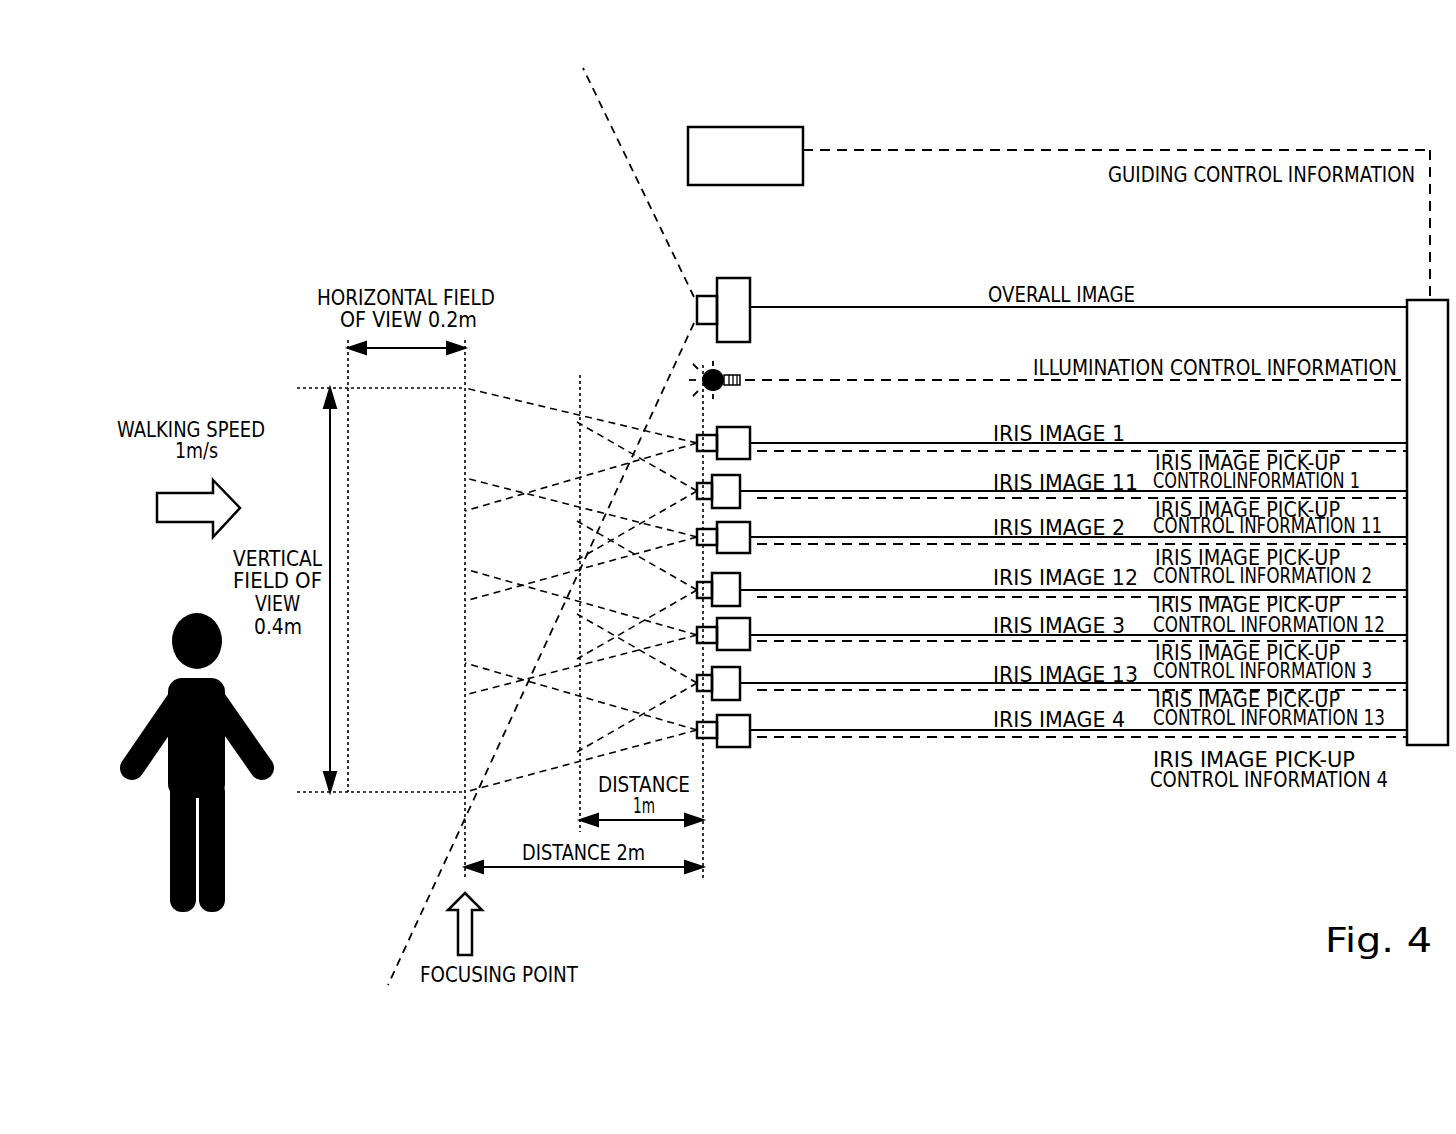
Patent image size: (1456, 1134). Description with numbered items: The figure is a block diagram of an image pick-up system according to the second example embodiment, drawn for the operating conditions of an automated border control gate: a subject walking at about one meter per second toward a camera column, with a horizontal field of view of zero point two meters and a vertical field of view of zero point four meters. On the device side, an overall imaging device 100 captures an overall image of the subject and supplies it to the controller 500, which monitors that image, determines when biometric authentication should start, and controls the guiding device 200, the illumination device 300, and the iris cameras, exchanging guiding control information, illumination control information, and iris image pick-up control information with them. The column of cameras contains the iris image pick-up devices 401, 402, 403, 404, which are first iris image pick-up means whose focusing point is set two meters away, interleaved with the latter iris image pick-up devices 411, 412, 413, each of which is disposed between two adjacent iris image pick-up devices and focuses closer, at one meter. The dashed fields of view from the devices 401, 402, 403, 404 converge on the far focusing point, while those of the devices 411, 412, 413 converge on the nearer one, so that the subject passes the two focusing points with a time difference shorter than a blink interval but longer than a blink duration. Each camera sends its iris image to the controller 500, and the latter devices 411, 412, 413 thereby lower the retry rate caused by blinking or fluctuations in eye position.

The overall imaging device 100 is at (737, 276).
The guiding device 200 is at (803, 133).
The illumination device 300 is at (735, 372).
The iris image pick-up device 401 is at (738, 428).
The iris image pick-up device 402 is at (750, 530).
The iris image pick-up device 403 is at (750, 623).
The iris image pick-up device 404 is at (737, 748).
The latter iris image pick-up device 411 is at (740, 486).
The latter iris image pick-up device 412 is at (740, 581).
The latter iris image pick-up device 413 is at (740, 671).
The controller 500 is at (1418, 746).